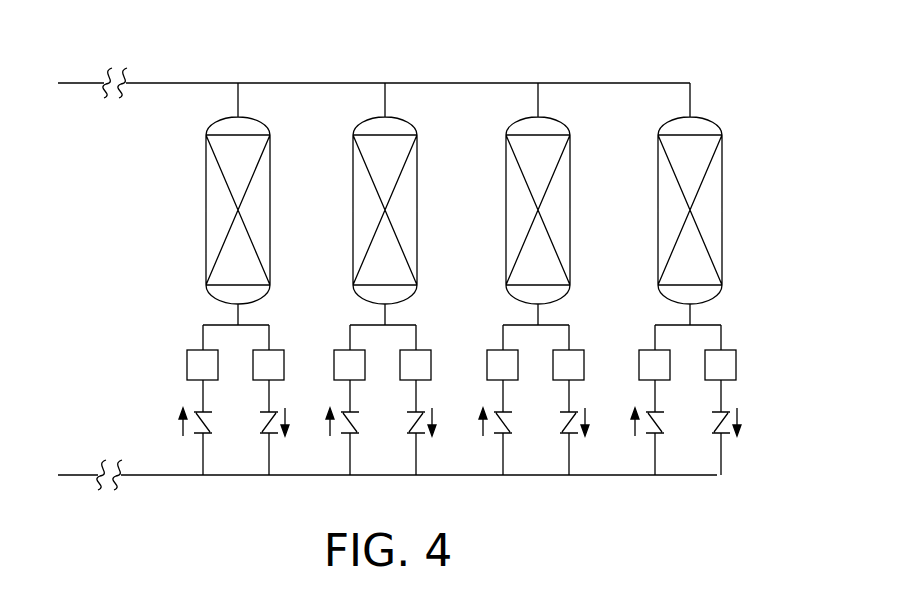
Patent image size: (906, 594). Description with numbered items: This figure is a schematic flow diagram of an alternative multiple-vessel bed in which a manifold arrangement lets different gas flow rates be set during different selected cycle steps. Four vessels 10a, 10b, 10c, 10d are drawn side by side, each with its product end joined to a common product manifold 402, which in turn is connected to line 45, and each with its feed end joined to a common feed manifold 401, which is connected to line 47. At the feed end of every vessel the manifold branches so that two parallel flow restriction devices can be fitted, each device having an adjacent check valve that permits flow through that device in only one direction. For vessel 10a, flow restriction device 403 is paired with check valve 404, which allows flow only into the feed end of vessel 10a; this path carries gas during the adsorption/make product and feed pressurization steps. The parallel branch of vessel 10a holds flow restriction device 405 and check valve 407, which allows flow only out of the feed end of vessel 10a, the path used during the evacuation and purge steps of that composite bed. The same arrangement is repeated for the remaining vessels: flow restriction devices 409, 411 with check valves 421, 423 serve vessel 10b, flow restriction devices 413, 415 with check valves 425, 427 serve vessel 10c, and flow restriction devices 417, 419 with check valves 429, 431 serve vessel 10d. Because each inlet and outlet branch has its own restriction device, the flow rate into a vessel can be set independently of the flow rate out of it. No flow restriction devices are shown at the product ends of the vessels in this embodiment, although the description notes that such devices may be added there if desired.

The line 45 is at (86, 82).
The line 47 is at (86, 476).
The product manifold 402 is at (438, 82).
The feed manifold 401 is at (419, 495).
The vessel 10a is at (271, 212).
The vessel 10b is at (418, 232).
The vessel 10c is at (571, 212).
The vessel 10d is at (723, 230).
The flow restriction device 403 is at (187, 365).
The flow restriction device 405 is at (253, 365).
The check valve 404 is at (212, 431).
The check valve 407 is at (272, 438).
The flow restriction device 409 is at (334, 362).
The flow restriction device 411 is at (400, 365).
The check valve 421 is at (362, 432).
The check valve 423 is at (422, 438).
The flow restriction device 413 is at (487, 362).
The flow restriction device 415 is at (553, 365).
The check valve 425 is at (514, 432).
The check valve 427 is at (574, 438).
The flow restriction device 417 is at (639, 362).
The flow restriction device 419 is at (736, 362).
The check valve 429 is at (666, 432).
The check valve 431 is at (724, 440).